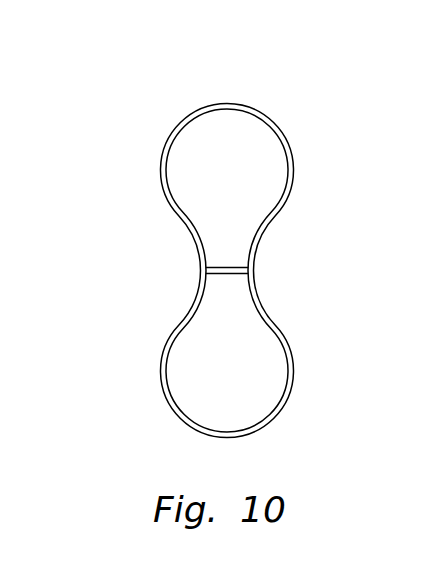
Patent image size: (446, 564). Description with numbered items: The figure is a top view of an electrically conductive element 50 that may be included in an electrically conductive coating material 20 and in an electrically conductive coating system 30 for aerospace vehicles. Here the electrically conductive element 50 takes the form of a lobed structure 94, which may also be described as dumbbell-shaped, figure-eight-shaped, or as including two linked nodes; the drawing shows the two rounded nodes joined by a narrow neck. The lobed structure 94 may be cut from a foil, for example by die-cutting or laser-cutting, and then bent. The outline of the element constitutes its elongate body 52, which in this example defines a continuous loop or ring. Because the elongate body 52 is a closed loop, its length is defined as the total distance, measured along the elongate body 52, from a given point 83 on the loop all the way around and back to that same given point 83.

The electrically conductive coating material 20 is at (106, 78).
The electrically conductive coating system 30 is at (104, 117).
The electrically conductive element 50 is at (106, 164).
The elongate body 52 is at (160, 174).
The given point 83 is at (159, 354).
The lobed structure 94 is at (318, 199).